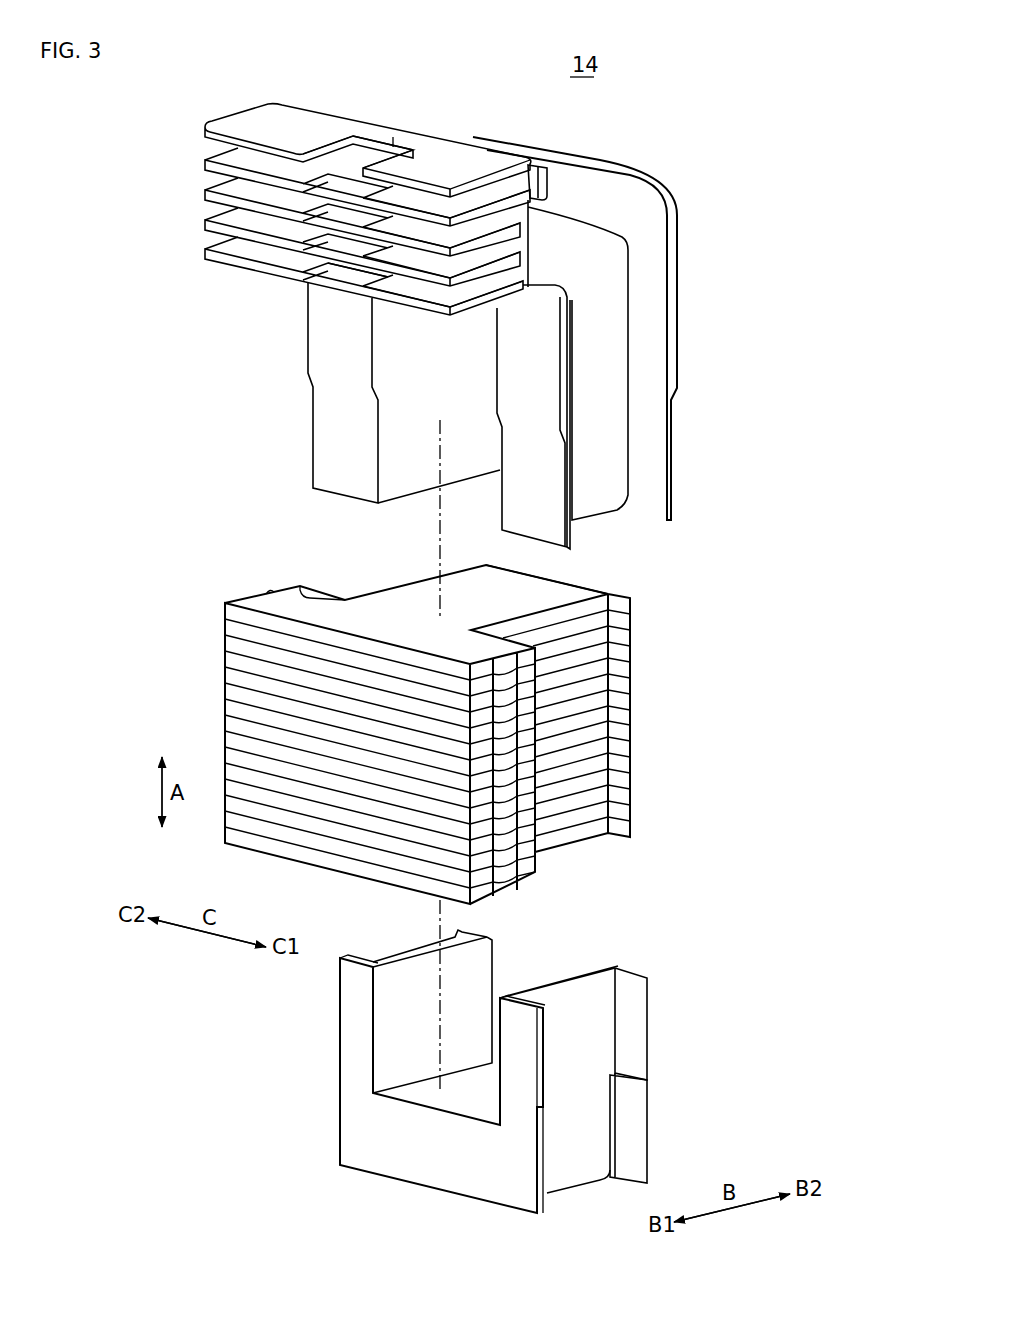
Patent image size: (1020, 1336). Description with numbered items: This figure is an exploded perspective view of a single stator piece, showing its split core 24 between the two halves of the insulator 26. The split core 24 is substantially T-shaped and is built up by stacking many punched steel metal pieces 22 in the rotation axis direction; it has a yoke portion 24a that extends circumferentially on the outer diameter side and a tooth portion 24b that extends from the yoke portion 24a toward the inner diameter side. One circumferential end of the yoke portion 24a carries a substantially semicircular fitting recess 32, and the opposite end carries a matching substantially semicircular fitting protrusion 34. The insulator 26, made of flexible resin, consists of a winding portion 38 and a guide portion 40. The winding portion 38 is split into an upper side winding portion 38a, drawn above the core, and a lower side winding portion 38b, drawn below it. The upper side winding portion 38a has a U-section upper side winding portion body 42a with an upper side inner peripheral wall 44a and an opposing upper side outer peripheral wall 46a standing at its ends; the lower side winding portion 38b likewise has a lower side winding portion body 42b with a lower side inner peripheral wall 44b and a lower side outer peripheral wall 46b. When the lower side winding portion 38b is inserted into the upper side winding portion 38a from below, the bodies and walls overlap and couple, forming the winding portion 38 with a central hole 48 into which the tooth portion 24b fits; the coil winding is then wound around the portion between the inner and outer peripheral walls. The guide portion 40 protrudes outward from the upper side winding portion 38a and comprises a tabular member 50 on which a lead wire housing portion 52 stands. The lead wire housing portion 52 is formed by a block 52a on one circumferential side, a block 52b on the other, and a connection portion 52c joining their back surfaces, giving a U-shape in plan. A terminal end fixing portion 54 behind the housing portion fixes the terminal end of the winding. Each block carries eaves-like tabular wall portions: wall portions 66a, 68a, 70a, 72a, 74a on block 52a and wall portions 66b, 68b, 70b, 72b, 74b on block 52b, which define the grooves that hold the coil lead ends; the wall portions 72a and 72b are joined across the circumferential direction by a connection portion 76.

The metal piece 22 is at (615, 792).
The split core 24 is at (458, 748).
The yoke portion 24a is at (318, 600).
The tooth portion 24b is at (540, 586).
The insulator 26 is at (611, 308).
The fitting recess 32 is at (268, 590).
The fitting protrusion 34 is at (505, 895).
The winding portion 38 is at (500, 1072).
The upper side winding portion 38a is at (672, 333).
The lower side winding portion 38b is at (648, 1042).
The guide portion 40 is at (447, 304).
The upper side winding portion body 42a is at (604, 498).
The lower side winding portion body 42b is at (575, 1170).
The upper side inner peripheral wall 44a is at (672, 390).
The lower side inner peripheral wall 44b is at (648, 1117).
The upper side outer peripheral wall 46a is at (322, 452).
The lower side outer peripheral wall 46b is at (340, 1100).
The hole 48 is at (395, 1028).
The tabular member 50 is at (448, 211).
The lead wire housing portion 52 is at (391, 107).
The block 52a is at (343, 128).
The block 52b is at (421, 124).
The connection portion 52c is at (406, 137).
The terminal end fixing portion 54 is at (540, 185).
The wall portion 66a is at (250, 118).
The wall portion 66b is at (490, 160).
The wall portion 68a is at (208, 162).
The wall portion 68b is at (533, 250).
The wall portion 70a is at (208, 192).
The wall portion 70b is at (533, 267).
The wall portion 72a is at (208, 222).
The wall portion 72b is at (503, 277).
The wall portion 74a is at (206, 252).
The wall portion 74b is at (457, 317).
The connection portion 76 is at (338, 262).